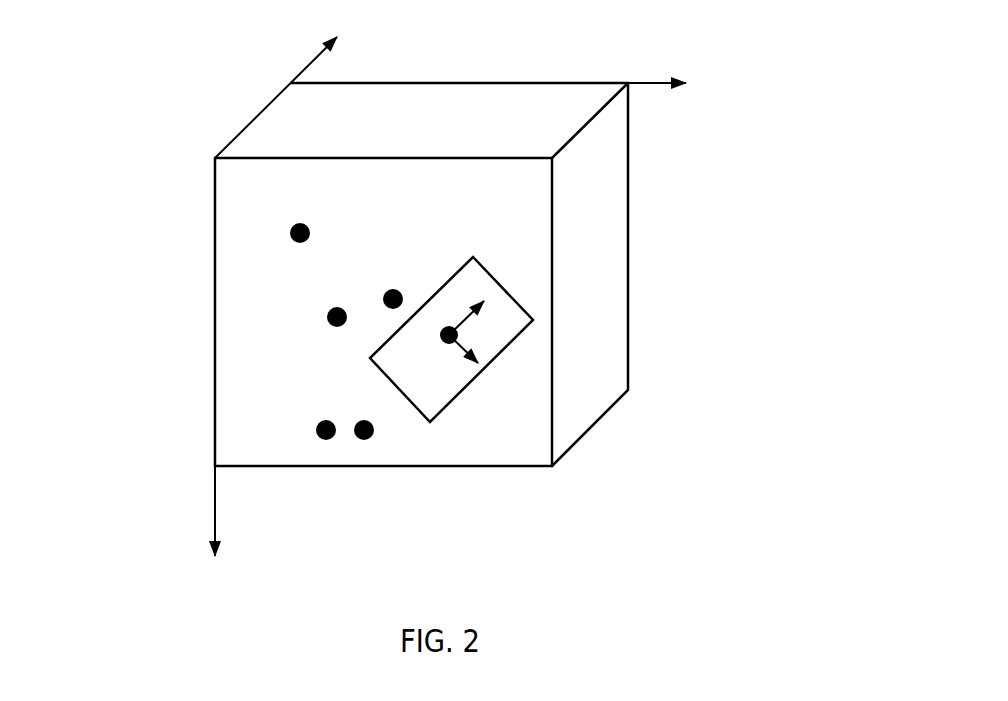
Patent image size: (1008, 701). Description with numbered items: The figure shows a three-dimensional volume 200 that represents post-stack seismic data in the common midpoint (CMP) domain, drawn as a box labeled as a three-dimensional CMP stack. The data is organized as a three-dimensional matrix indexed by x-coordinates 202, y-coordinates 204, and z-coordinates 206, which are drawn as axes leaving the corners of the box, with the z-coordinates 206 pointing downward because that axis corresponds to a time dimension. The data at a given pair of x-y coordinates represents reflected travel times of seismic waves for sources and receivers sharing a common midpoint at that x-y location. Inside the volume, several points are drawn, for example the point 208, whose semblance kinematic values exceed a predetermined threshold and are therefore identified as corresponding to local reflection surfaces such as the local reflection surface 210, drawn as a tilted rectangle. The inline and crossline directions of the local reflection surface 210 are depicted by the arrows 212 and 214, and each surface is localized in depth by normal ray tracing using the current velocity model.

The 3D volume 200 is at (212, 312).
The x-coordinates 202 is at (545, 34).
The y-coordinates 204 is at (895, 94).
The z-coordinates 206 is at (311, 613).
The point 208 is at (287, 232).
The local reflection surface 210 is at (517, 296).
The inline direction 212 is at (490, 301).
The crossline direction 214 is at (457, 378).